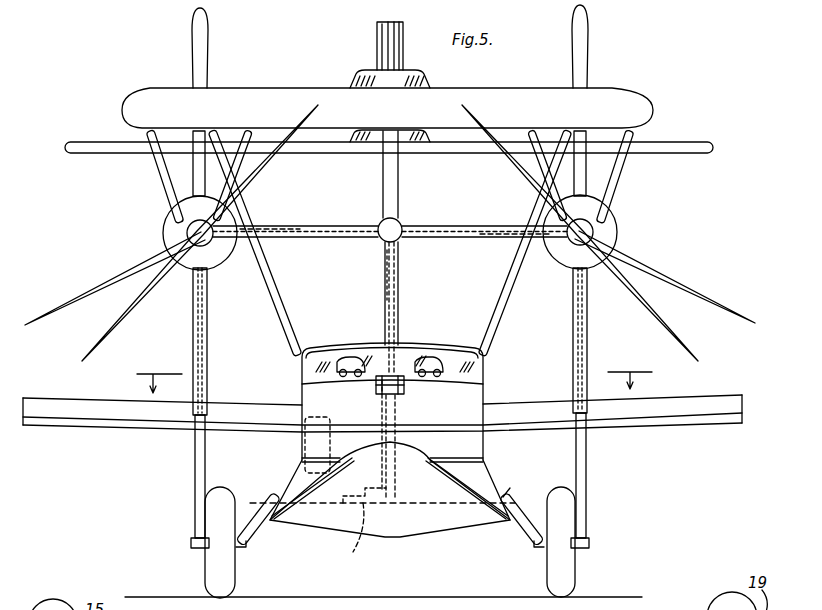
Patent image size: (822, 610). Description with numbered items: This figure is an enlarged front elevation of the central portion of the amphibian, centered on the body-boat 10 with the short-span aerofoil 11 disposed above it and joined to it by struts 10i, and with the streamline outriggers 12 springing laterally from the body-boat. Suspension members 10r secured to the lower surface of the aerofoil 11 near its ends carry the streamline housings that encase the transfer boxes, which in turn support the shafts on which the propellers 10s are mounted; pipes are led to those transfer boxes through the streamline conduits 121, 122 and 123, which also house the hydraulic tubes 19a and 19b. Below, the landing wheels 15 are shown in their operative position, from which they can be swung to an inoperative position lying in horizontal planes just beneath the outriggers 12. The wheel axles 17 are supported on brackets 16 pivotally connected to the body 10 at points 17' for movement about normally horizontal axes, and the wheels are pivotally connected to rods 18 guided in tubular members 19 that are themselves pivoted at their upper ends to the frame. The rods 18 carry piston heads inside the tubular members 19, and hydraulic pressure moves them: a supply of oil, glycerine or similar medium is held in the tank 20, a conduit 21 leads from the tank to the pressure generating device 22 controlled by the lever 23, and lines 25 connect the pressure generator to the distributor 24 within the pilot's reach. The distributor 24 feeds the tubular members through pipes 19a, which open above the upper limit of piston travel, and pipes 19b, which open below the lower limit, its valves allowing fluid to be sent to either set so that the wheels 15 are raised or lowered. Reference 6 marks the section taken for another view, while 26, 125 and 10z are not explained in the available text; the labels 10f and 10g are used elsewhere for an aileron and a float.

The body-boat 10 is at (346, 520).
The aerofoil 11 is at (246, 96).
The streamline outriggers 12 is at (58, 404).
The landing wheels 15 is at (236, 578).
The brackets 16 is at (251, 546).
The wheel axles 17 is at (389, 549).
The pivot points 17' is at (519, 480).
The rods 18 is at (195, 488).
The tubular members 19 is at (208, 365).
The pipes 19a is at (305, 226).
The pipes 19b is at (462, 244).
The section line 6 is at (394, 385).
The tank 20 is at (302, 443).
The conduit 21 is at (296, 479).
The pressure generating device 22 is at (361, 536).
The lever 23 is at (376, 480).
The distributor 24 is at (405, 386).
The lines 25 is at (380, 410).
The vertical shaft 26 is at (384, 277).
The streamline conduit 121 is at (399, 303).
The streamline conduit 122 is at (284, 222).
The streamline conduit 123 is at (414, 220).
The engine 125 is at (378, 34).
The aileron 10f is at (226, 258).
The float 10g is at (562, 255).
The struts 10i is at (284, 308).
The inner strut right 10z is at (503, 300).
The suspension members 10r is at (165, 177).
The propellers 10s is at (127, 310).